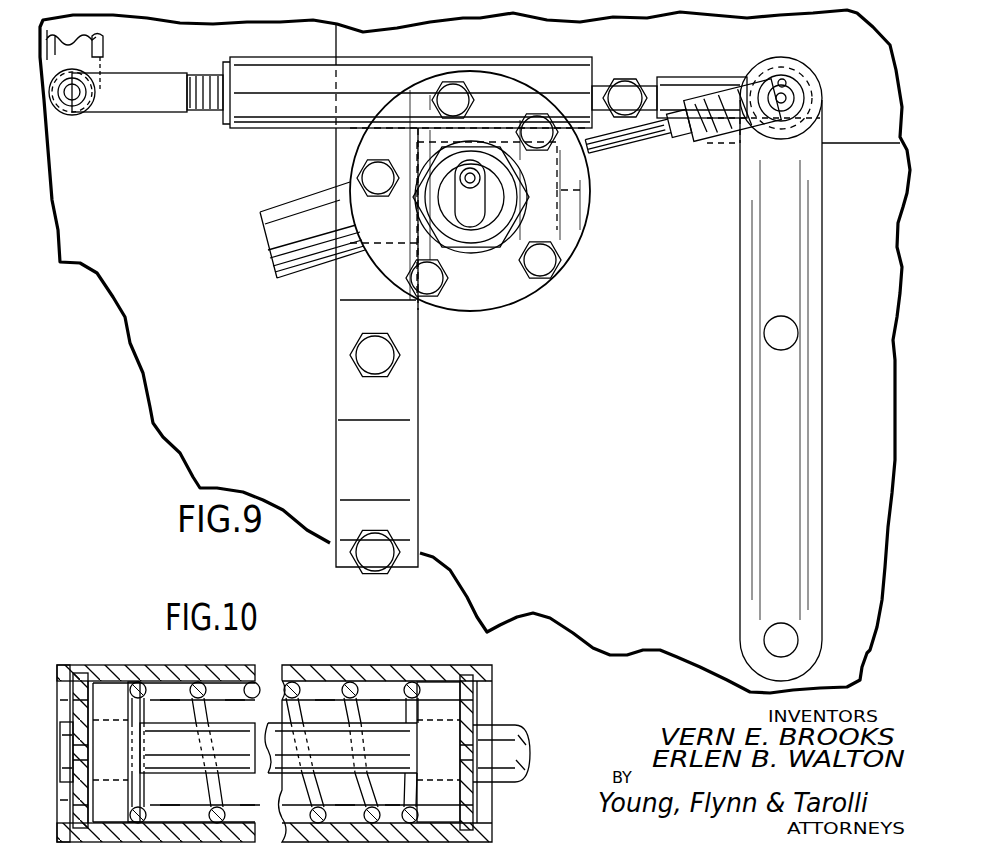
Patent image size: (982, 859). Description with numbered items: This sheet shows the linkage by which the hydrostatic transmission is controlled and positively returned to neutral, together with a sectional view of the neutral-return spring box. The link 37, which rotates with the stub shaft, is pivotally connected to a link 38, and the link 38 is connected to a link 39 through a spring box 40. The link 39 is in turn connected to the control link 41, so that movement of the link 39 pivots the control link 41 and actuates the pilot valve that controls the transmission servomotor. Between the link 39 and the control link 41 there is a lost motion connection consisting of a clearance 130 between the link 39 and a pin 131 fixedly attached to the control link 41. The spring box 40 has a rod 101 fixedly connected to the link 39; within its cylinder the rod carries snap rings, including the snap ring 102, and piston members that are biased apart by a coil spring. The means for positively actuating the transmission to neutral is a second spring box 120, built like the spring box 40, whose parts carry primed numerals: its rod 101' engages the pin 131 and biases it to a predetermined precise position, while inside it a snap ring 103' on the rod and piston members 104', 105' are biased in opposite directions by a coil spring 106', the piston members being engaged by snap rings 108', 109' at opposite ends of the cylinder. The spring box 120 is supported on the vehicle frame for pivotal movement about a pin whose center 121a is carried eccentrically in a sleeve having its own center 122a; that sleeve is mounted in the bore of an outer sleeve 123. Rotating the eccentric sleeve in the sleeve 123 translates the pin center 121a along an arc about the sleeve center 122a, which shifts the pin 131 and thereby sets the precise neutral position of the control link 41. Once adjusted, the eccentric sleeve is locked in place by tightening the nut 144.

In FIG. 9, the link 37 is at (104, 53).
In FIG. 9, the link 38 is at (206, 73).
In FIG. 9, the link 39 is at (688, 78).
In FIG. 9, the spring box 40 is at (411, 60).
In FIG. 9, the control link 41 is at (822, 188).
In FIG. 9, the rod 101 is at (624, 81).
In FIG. 9, the rod 101' is at (681, 128).
In FIG. 10, the rod 101' is at (517, 739).
In FIG. 10, the snap ring 102 is at (86, 720).
In FIG. 10, the snap ring 103' is at (301, 752).
In FIG. 10, the piston member 104' is at (255, 730).
In FIG. 10, the piston member 105' is at (422, 724).
In FIG. 10, the coil spring 106' is at (275, 752).
In FIG. 10, the snap ring 108' is at (102, 732).
In FIG. 10, the snap ring 109' is at (499, 752).
In FIG. 9, the spring box 120 is at (318, 270).
In FIG. 10, the spring box 120 is at (236, 667).
In FIG. 9, the center of the pin 121a is at (470, 170).
In FIG. 9, the center of the sleeve 122a is at (442, 200).
In FIG. 9, the sleeve 123 is at (580, 222).
In FIG. 9, the clearance 130 is at (800, 64).
In FIG. 9, the pin 131 is at (812, 98).
In FIG. 9, the nut 144 is at (470, 240).